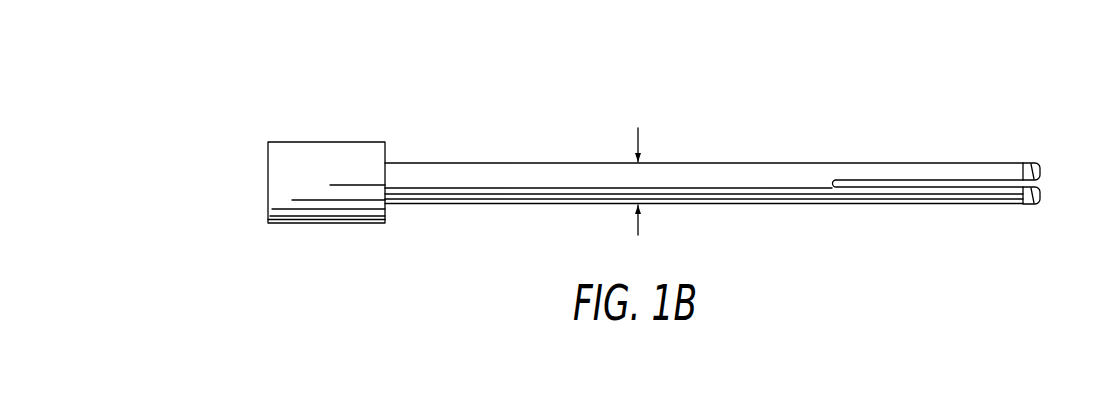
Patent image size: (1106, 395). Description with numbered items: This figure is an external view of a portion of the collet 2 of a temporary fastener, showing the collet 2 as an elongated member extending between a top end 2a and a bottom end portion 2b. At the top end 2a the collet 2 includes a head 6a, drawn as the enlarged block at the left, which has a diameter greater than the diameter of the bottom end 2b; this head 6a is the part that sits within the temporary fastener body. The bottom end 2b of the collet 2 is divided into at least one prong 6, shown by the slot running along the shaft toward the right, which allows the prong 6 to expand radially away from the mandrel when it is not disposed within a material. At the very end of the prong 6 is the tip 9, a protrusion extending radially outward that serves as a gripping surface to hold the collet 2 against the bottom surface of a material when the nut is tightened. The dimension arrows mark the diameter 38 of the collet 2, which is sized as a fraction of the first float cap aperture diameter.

The collet 2 is at (883, 104).
The top end of the collet 2a is at (268, 231).
The bottom end portion of the collet 2b is at (1044, 213).
The prong 6 is at (975, 161).
The head 6a is at (322, 150).
The tip 9 is at (1031, 160).
The diameter of the collet 38 is at (638, 140).